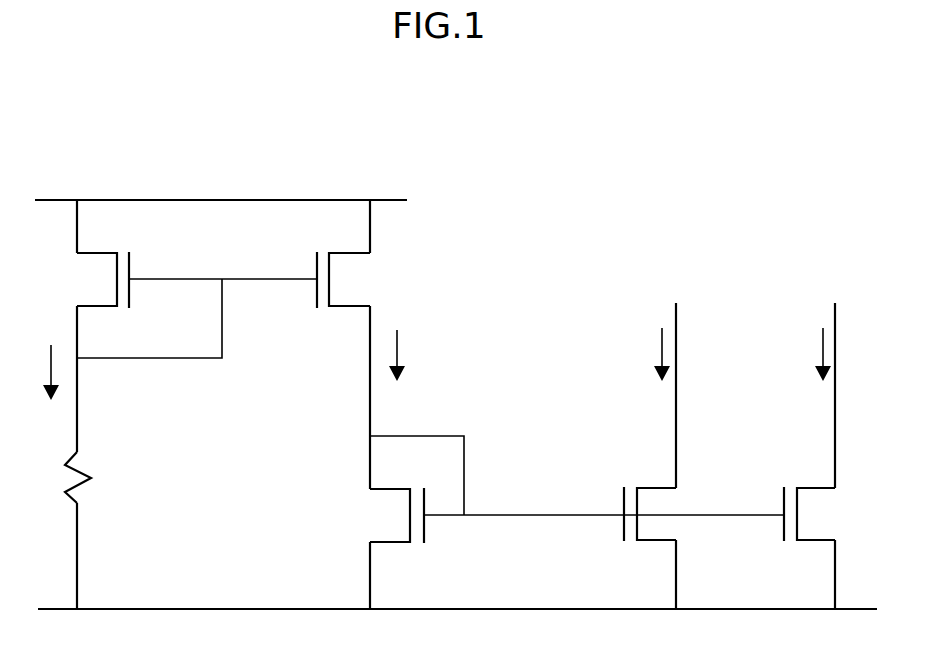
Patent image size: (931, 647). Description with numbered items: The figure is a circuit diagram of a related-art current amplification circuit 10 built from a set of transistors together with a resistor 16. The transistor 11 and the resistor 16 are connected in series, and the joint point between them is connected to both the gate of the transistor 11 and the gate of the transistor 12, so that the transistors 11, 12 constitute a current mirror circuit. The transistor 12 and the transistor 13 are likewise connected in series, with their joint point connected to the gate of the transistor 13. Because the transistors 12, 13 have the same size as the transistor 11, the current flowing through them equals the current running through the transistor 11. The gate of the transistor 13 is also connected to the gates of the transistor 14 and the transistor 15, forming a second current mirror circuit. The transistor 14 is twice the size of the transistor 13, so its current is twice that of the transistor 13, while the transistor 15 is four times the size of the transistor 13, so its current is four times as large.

The current amplification circuit 10 is at (476, 160).
The transistor 11 is at (150, 242).
The transistor 12 is at (310, 320).
The transistor 13 is at (418, 550).
The transistor 14 is at (623, 553).
The transistor 15 is at (783, 553).
The resistor 16 is at (106, 504).